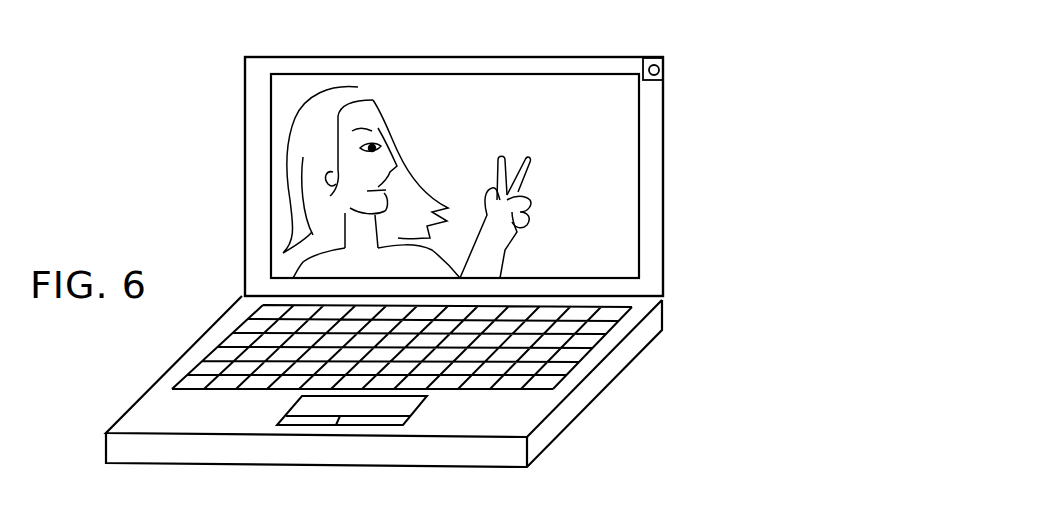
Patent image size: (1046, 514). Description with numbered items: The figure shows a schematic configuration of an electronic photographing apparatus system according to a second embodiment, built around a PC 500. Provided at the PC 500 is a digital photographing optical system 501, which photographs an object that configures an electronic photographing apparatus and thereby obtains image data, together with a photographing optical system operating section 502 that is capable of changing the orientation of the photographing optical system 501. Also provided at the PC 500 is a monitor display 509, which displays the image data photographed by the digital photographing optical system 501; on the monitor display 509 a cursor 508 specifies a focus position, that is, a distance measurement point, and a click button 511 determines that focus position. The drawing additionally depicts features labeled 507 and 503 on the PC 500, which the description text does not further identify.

The PC 500 is at (664, 316).
The digital photographing optical system 501 is at (664, 70).
The photographing optical system operating section 502 is at (661, 57).
The touch pad 503 is at (300, 403).
The display unit 507 is at (548, 57).
The cursor 508 is at (386, 149).
The monitor display 509 is at (658, 146).
The click button 511 is at (360, 420).